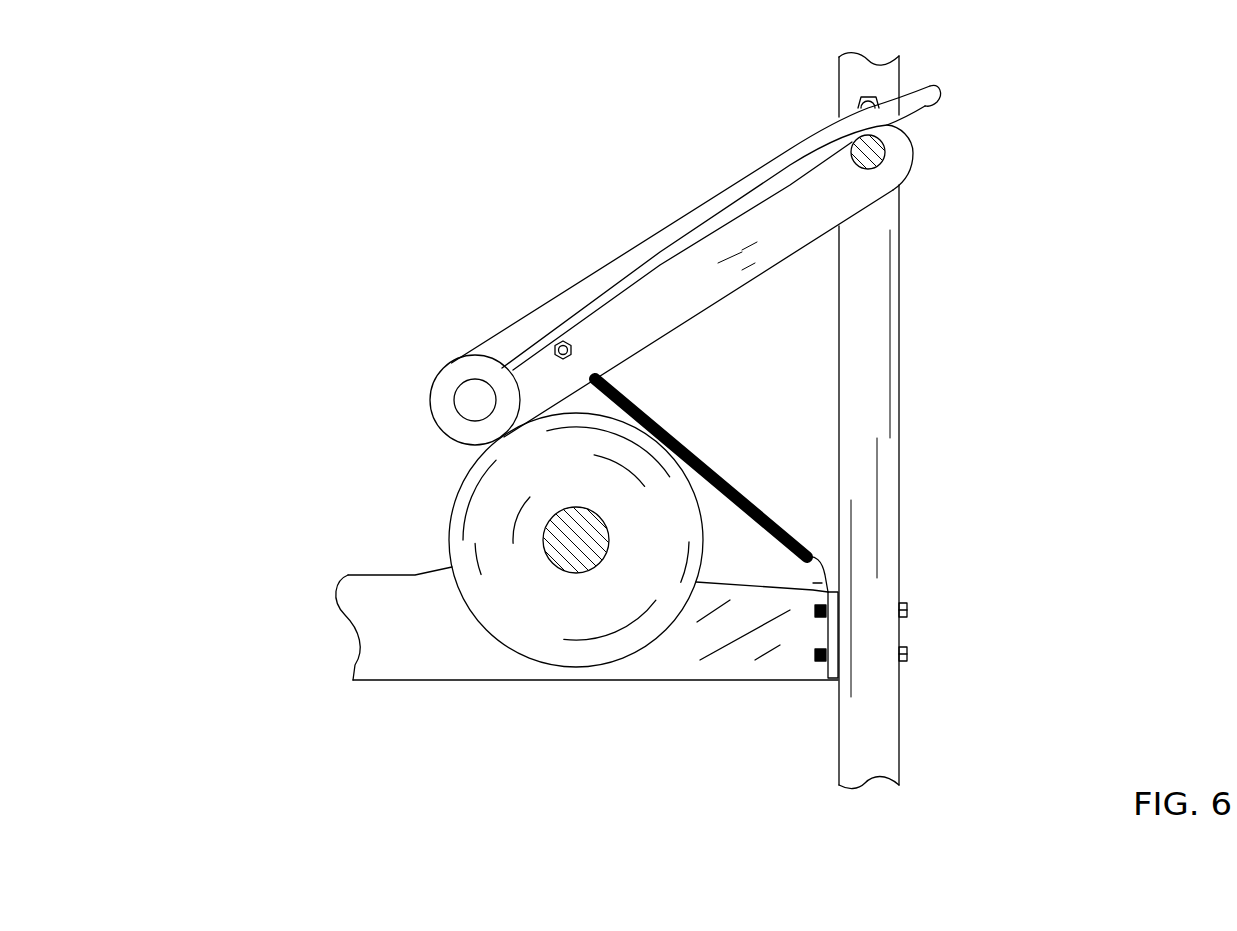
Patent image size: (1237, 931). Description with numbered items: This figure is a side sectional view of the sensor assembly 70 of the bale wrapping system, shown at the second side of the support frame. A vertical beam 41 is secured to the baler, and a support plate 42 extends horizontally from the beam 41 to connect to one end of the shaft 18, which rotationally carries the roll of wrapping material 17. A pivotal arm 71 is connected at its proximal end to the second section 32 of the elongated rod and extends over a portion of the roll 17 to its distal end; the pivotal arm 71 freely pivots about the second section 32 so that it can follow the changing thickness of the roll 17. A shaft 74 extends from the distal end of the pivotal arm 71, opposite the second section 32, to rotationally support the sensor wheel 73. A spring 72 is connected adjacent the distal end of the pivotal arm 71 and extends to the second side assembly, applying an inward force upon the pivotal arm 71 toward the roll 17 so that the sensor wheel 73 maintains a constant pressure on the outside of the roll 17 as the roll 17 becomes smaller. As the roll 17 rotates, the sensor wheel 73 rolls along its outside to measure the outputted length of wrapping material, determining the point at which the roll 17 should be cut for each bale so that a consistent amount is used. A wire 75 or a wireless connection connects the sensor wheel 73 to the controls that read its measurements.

The sensor assembly 70 is at (357, 188).
The pivotal arm 71 is at (690, 226).
The spring 72 is at (715, 468).
The sensor wheel 73 is at (438, 412).
The shaft 74 is at (470, 397).
The wire 75 is at (940, 105).
The second section 32 is at (887, 150).
The vertical beam 41 is at (880, 390).
The support plate 42 is at (675, 669).
The roll of wrapping material 17 is at (558, 628).
The shaft 18 is at (545, 530).